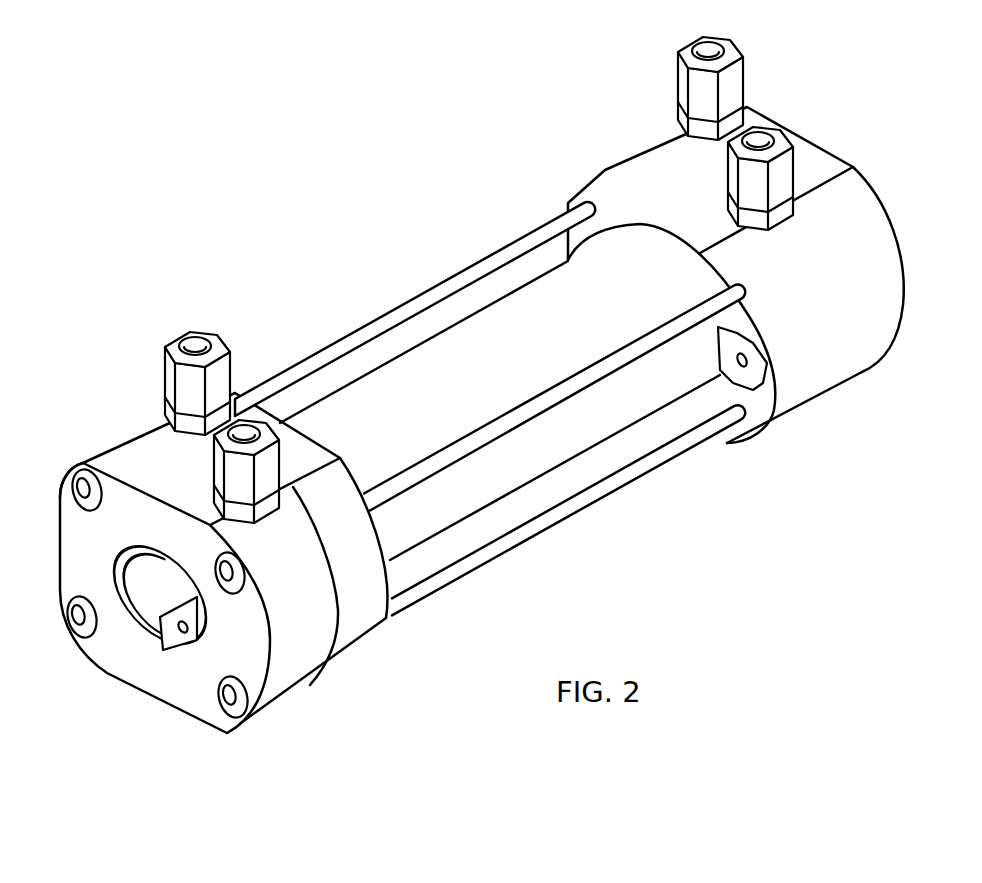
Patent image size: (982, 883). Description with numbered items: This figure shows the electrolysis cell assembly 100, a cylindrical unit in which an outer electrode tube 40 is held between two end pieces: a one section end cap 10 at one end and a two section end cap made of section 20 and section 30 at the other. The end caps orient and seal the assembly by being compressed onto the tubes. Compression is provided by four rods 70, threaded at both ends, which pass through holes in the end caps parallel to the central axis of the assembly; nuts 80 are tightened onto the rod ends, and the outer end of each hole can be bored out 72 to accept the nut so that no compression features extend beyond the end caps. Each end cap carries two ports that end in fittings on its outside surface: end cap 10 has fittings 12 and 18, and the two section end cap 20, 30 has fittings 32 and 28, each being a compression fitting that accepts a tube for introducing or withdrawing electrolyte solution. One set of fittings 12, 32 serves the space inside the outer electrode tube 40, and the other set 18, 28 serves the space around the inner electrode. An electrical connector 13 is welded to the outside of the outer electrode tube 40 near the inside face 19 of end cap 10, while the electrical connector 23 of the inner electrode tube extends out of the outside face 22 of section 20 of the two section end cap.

The electrolysis cell assembly 100 is at (380, 298).
The one section end cap 10 is at (820, 352).
The fitting 12 is at (783, 175).
The electrical connector 13 is at (757, 373).
The fitting 18 is at (730, 92).
The inside face 19 is at (613, 195).
The section of two section end cap 20 is at (287, 680).
The outside face 22 is at (118, 650).
The electrical connector 23 is at (177, 638).
The fitting 28 is at (214, 462).
The section of two section end cap 30 is at (360, 623).
The fitting 32 is at (170, 370).
The outer electrode tube 40 is at (553, 465).
The rods 70 is at (650, 463).
The bored out hole end 72 is at (72, 500).
The nut 80 is at (77, 478).